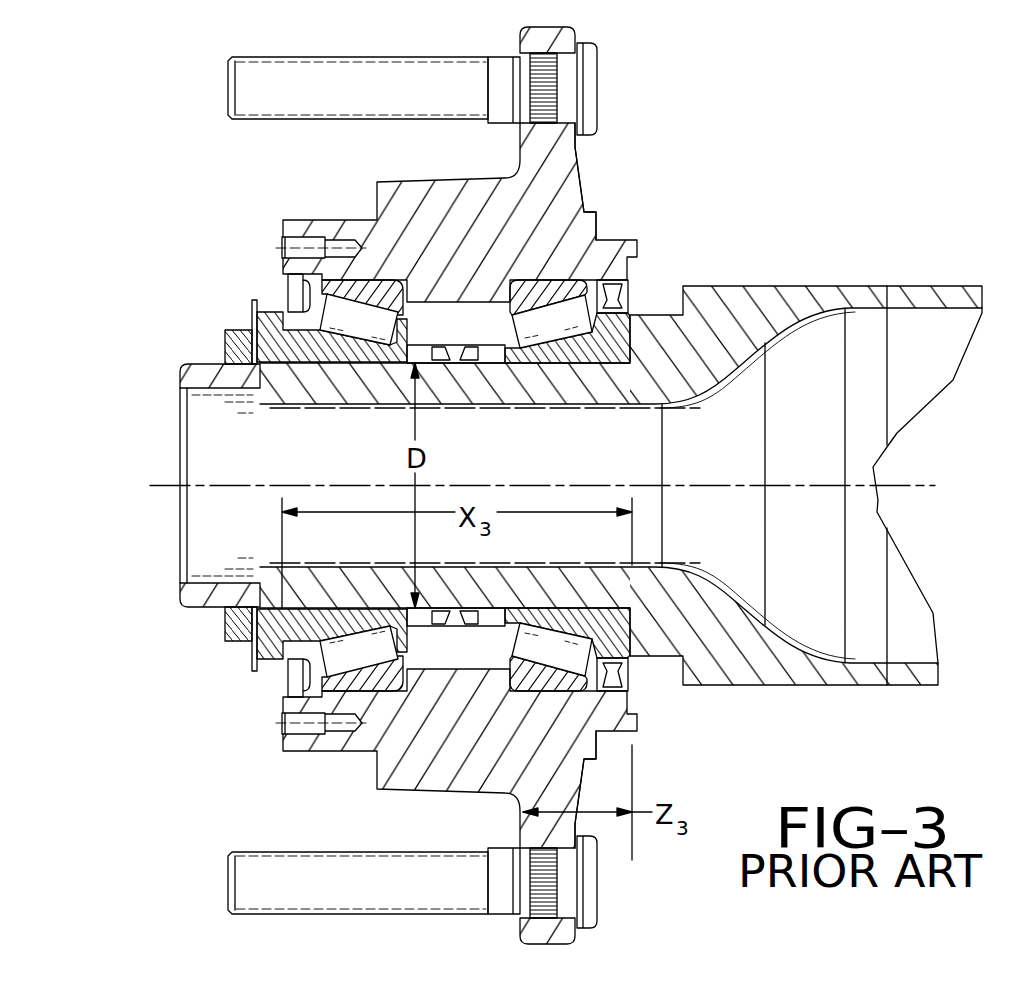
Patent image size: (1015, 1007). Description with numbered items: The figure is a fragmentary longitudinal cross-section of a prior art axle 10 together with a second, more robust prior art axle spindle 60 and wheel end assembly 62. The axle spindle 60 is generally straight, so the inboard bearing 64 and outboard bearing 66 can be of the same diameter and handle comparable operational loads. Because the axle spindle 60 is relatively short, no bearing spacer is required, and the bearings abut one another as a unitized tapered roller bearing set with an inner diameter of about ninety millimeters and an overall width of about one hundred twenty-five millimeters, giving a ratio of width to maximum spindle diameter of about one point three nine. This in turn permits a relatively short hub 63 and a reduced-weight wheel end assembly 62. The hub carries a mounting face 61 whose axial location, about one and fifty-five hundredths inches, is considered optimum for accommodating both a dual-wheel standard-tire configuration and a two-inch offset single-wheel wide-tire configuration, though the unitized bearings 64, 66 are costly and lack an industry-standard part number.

The axle 10 is at (943, 283).
The axle spindle 60 is at (181, 590).
The mounting face 61 is at (515, 128).
The wheel end assembly 62 is at (584, 181).
The hub 63 is at (333, 221).
The inboard bearing 64 is at (560, 347).
The outboard bearing 66 is at (342, 350).